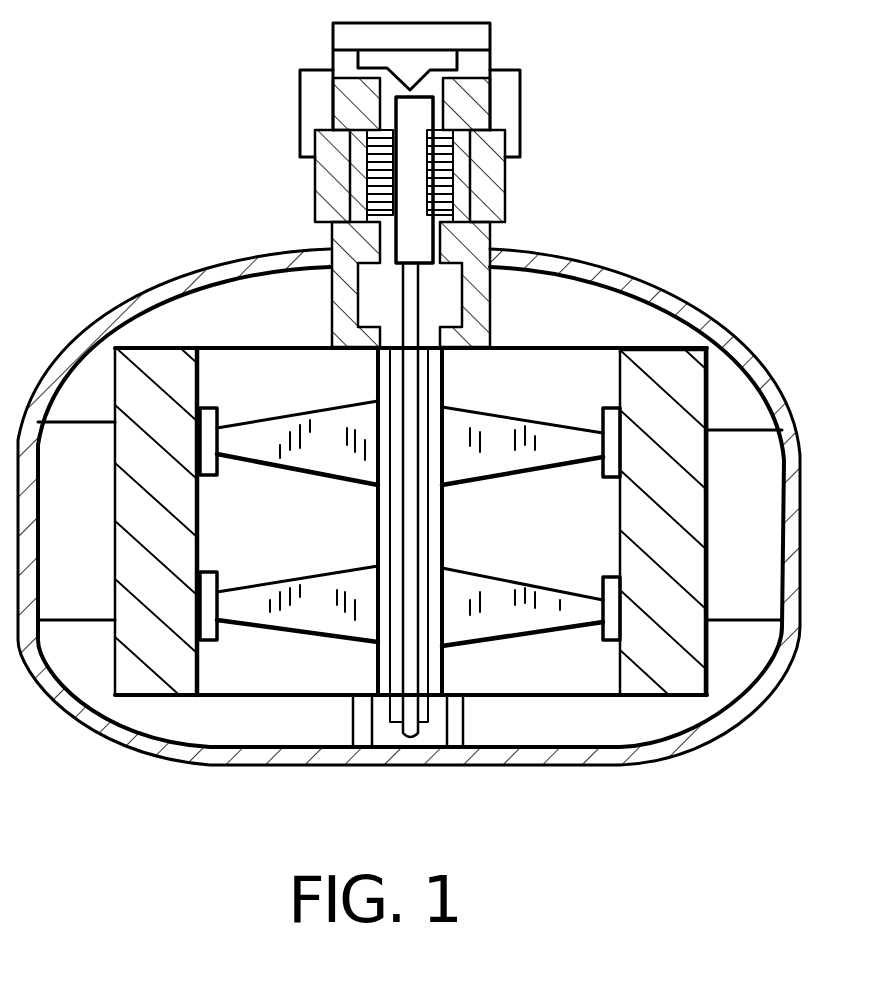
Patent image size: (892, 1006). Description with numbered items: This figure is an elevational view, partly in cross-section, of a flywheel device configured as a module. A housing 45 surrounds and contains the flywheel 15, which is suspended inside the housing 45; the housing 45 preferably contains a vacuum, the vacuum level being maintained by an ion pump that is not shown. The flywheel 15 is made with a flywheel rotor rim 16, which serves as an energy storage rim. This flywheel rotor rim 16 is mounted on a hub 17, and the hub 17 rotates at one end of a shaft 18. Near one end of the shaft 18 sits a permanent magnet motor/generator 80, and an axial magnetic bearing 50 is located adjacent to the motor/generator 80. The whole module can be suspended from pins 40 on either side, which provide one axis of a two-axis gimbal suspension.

The flywheel 15 is at (409, 401).
The flywheel rotor rim 16 is at (153, 677).
The hub 17 is at (505, 582).
The shaft 18 is at (378, 531).
The pins 40 is at (265, 121).
The housing 45 is at (684, 298).
The axial magnetic bearing 50 is at (448, 42).
The permanent magnet motor/generator 80 is at (315, 177).